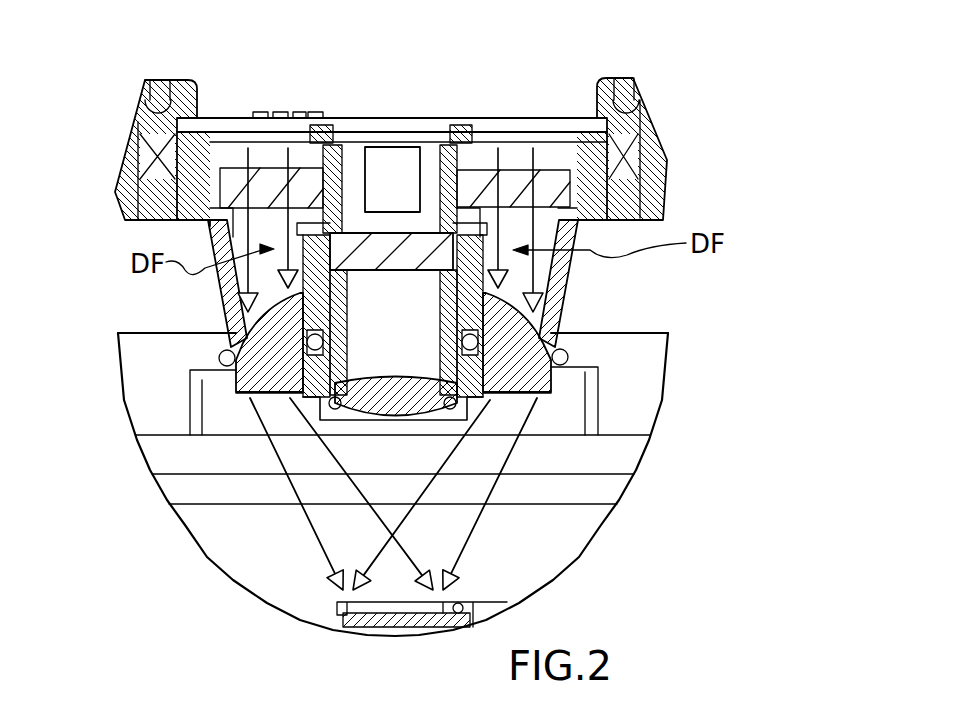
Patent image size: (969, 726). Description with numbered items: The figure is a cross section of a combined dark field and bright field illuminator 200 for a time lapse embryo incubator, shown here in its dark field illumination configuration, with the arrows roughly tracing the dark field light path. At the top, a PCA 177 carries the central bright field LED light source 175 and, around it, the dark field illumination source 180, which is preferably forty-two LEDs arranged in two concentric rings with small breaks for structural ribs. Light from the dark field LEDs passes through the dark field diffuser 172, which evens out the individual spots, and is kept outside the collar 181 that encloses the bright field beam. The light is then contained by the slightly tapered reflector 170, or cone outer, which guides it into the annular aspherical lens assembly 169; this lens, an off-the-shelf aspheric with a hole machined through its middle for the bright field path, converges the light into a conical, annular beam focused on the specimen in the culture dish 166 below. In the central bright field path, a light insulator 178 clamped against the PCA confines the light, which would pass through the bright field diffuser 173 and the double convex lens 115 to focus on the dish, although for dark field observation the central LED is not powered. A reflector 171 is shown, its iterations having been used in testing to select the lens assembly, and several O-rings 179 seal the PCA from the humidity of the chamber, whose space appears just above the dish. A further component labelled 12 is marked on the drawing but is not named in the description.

The circuit board 12 is at (522, 118).
The double convex lens 115 is at (418, 400).
The culture dish 166 is at (457, 627).
The annular aspherical lens assembly 169 is at (548, 333).
The reflector (cone outer) 170 is at (562, 288).
The reflector 171 is at (510, 412).
The dark field diffuser 172 is at (548, 118).
The bright field diffuser 173 is at (367, 250).
The light source (bright field LED) 175 is at (403, 157).
The PCA (printed circuit assembly) 177 is at (497, 118).
The light insulator 178 is at (312, 130).
The O-rings 179 is at (570, 355).
The dark field illumination source 180 is at (228, 148).
The collar 181 is at (337, 360).
The combined dark field and bright field illuminator 200 is at (197, 625).